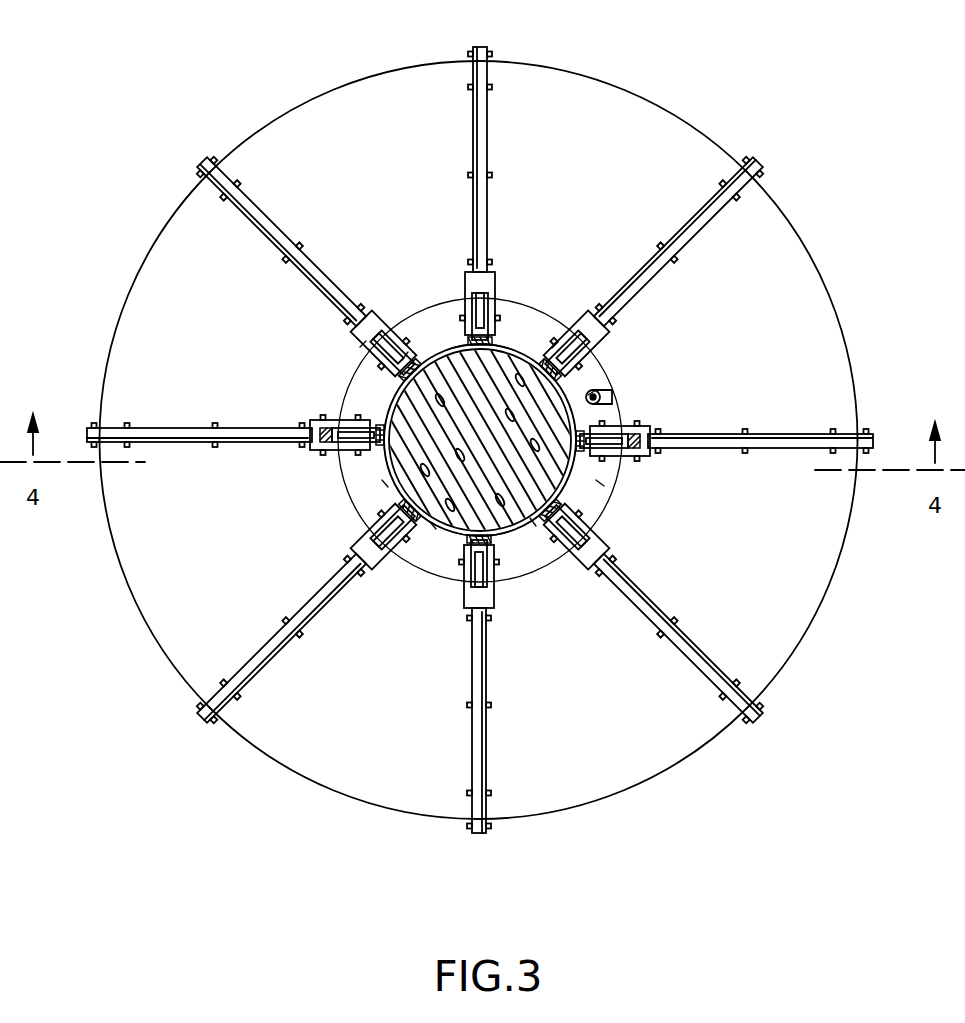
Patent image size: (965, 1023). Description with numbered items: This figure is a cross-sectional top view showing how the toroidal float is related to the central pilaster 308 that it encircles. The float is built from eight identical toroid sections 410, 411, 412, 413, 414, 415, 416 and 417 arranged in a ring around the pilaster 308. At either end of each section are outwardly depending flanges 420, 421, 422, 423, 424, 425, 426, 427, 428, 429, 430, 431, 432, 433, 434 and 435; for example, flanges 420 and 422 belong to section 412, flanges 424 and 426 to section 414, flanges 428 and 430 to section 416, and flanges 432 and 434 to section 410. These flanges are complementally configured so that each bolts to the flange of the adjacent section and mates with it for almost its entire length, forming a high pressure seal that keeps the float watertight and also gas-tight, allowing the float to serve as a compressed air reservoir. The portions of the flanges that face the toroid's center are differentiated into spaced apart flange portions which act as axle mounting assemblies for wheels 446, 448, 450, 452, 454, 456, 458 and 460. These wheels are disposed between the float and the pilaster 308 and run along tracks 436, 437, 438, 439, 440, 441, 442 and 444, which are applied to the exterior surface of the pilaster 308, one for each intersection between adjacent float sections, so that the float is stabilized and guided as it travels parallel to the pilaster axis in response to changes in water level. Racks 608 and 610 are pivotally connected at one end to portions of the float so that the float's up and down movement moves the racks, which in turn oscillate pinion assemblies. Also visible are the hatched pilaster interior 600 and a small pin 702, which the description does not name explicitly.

The pilaster 308 is at (397, 489).
The float section 410 is at (136, 600).
The float section 411 is at (153, 247).
The float section 412 is at (382, 804).
The float section 413 is at (378, 73).
The float section 414 is at (597, 800).
The float section 415 is at (648, 99).
The float section 416 is at (824, 596).
The float section 417 is at (820, 280).
The outwardly depending flange 420 is at (231, 683).
The outwardly depending flange 421 is at (802, 433).
The outwardly depending flange 422 is at (470, 802).
The outwardly depending flange 423 is at (724, 202).
The outwardly depending flange 424 is at (476, 739).
The outwardly depending flange 425 is at (708, 197).
The outwardly depending flange 426 is at (721, 674).
The outwardly depending flange 427 is at (466, 146).
The outwardly depending flange 428 is at (743, 687).
The outwardly depending flange 429 is at (472, 128).
The outwardly depending flange 430 is at (783, 444).
The outwardly depending flange 431 is at (228, 198).
The outwardly depending flange 432 is at (218, 688).
The outwardly depending flange 433 is at (214, 189).
The outwardly depending flange 434 is at (178, 434).
The outwardly depending flange 435 is at (157, 424).
The track 436 is at (380, 425).
The track 437 is at (412, 357).
The track 438 is at (413, 510).
The track 439 is at (487, 350).
The track 440 is at (493, 541).
The track 441 is at (555, 378).
The track 442 is at (553, 502).
The track 444 is at (577, 453).
The wheel 446 is at (353, 432).
The wheel 448 is at (397, 322).
The wheel 450 is at (480, 308).
The wheel 452 is at (568, 350).
The wheel 454 is at (608, 444).
The wheel 456 is at (567, 540).
The wheel 458 is at (466, 578).
The wheel 460 is at (370, 523).
The disc 600 is at (462, 452).
The rack 608 is at (635, 456).
The rack 610 is at (325, 443).
The pin 702 is at (612, 397).